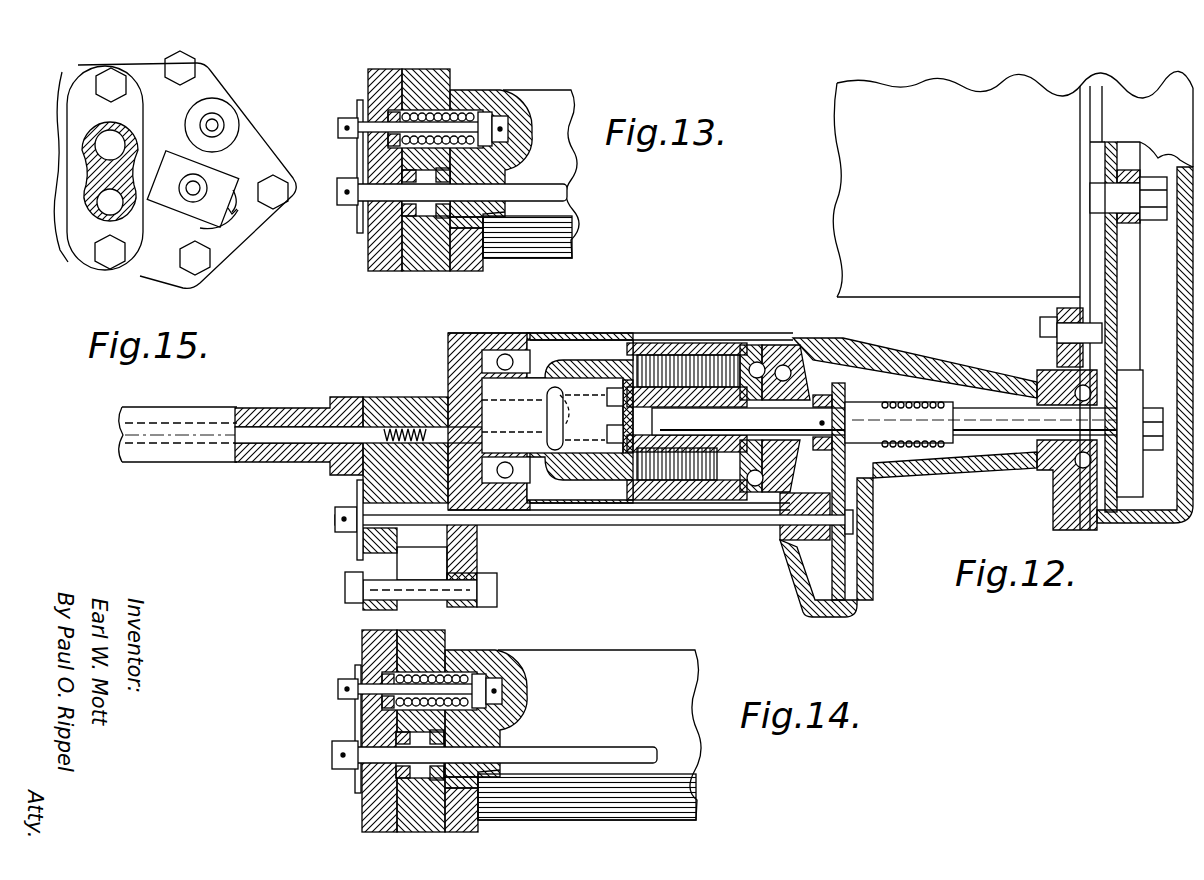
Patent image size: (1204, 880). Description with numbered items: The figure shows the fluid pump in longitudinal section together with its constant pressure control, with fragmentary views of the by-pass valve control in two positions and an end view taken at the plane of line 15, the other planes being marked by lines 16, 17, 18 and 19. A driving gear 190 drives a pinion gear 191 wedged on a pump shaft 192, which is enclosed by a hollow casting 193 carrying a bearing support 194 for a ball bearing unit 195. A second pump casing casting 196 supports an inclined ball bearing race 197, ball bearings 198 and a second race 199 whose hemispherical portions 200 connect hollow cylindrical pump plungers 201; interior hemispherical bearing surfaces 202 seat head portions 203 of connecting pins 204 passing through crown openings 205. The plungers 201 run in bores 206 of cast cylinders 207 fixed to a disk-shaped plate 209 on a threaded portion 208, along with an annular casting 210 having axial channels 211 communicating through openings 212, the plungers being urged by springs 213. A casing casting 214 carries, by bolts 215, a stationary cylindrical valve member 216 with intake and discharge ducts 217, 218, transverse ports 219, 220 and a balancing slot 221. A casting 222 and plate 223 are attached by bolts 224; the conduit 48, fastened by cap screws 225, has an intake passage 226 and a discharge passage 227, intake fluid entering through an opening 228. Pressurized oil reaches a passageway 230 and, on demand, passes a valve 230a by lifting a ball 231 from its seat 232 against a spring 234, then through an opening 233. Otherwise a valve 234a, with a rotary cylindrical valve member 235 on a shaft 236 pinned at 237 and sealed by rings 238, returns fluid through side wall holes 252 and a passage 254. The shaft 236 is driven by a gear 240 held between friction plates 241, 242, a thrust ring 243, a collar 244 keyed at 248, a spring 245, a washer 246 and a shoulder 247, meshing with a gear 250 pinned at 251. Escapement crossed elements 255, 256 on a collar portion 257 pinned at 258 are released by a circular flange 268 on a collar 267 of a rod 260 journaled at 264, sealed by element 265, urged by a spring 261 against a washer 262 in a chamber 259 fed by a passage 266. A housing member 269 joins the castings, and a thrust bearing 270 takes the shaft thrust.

In FIG. 12, the section line 15— 15 is at (324, 480).
In FIG. 12, the section line 16— 16 is at (617, 617).
In FIG. 12, the section line 17— 17 is at (537, 542).
In FIG. 12, the section line 18— 18 is at (428, 607).
In FIG. 12, the section line 19— 19 is at (172, 488).
In FIG. 15, the communicating conduit 48 is at (113, 206).
In FIG. 12, the communicating conduit 48 is at (122, 408).
In FIG. 12, the driving gear 190 is at (1108, 254).
In FIG. 12, the pinion gear 191 is at (1133, 473).
In FIG. 12, the pump shaft 192 is at (997, 440).
In FIG. 12, the hollow casting 193 is at (1015, 367).
In FIG. 12, the bearing support 194 is at (1032, 462).
In FIG. 12, the ball bearing unit 195 is at (1063, 478).
In FIG. 12, the second pump casing casting 196 is at (806, 617).
In FIG. 12, the ball bearing race 197 is at (703, 503).
In FIG. 12, the ball bearings 198 is at (795, 348).
In FIG. 12, the second race 199 is at (785, 340).
In FIG. 12, the hemispherical portions 200 is at (750, 333).
In FIG. 12, the hollow cylindrical pump plungers 201 is at (678, 333).
In FIG. 12, the interior hemispherical bearing surfaces 202 is at (772, 345).
In FIG. 12, the head portions 203 is at (896, 420).
In FIG. 12, the connecting pins 204 is at (705, 341).
In FIG. 12, the crown openings 205 is at (733, 333).
In FIG. 12, the cylinder bores 206 is at (752, 405).
In FIG. 12, the cast cylinders 207 is at (670, 333).
In FIG. 12, the threaded portion 208 is at (687, 421).
In FIG. 12, the disk-shaped plate 209 is at (623, 503).
In FIG. 12, the annular casting 210 is at (635, 515).
In FIG. 12, the axial channels 211 is at (573, 333).
In FIG. 12, the openings 212 is at (598, 333).
In FIG. 12, the springs 213 is at (657, 333).
In FIG. 12, the casing casting 214 is at (463, 333).
In FIG. 12, the bolts 215 is at (598, 345).
In FIG. 12, the stationary cylindrical valve member 216 is at (488, 340).
In FIG. 12, the axial intake duct 217 is at (495, 333).
In FIG. 12, the axial discharge duct 218 is at (628, 512).
In FIG. 12, the transverse intake port 219 is at (645, 520).
In FIG. 12, the transverse discharge port 220 is at (610, 503).
In FIG. 12, the additional slot 221 is at (565, 333).
In FIG. 12, the casting 222 is at (430, 395).
In FIG. 12, the plate 223 is at (375, 397).
In FIG. 15, the bolts 224 is at (205, 265).
In FIG. 12, the bolts 224 is at (345, 588).
In FIG. 15, the cap screws 225 is at (108, 260).
In FIG. 15, the intake passage 226 is at (108, 146).
In FIG. 12, the intake passage 226 is at (132, 462).
In FIG. 15, the high-pressure discharge passage 227 is at (120, 207).
In FIG. 12, the high-pressure discharge passage 227 is at (255, 399).
In FIG. 12, the opening 228 is at (415, 330).
In FIG. 12, the passageway 230 is at (560, 525).
In FIG. 12, the valve 230a is at (445, 385).
In FIG. 12, the ball 231 is at (552, 415).
In FIG. 12, the seat 232 is at (511, 445).
In FIG. 12, the opening 233 is at (380, 436).
In FIG. 12, the spring 234 is at (432, 404).
In FIG. 12, the valve 234a is at (385, 607).
In FIG. 14, the rotary cylindrical valve member 235 is at (435, 822).
In FIG. 14, the shaft 236 is at (615, 740).
In FIG. 12, the shaft 236 is at (745, 540).
In FIG. 12, the pin 237 is at (362, 557).
In FIG. 12, the composition sealing rings 238 is at (353, 537).
In FIG. 12, the gear 240 is at (835, 468).
In FIG. 12, the friction plate 241 is at (848, 403).
In FIG. 12, the friction plate 242 is at (845, 387).
In FIG. 12, the thrust ring 243 is at (833, 446).
In FIG. 12, the axially slidable collar 244 is at (912, 395).
In FIG. 12, the spring 245 is at (935, 396).
In FIG. 12, the washer 246 is at (958, 396).
In FIG. 12, the shoulder 247 is at (960, 412).
In FIG. 12, the key 248 is at (877, 410).
In FIG. 12, the gear 250 is at (866, 602).
In FIG. 12, the pin 251 is at (866, 588).
In FIG. 14, the side wall holes 252 is at (362, 790).
In FIG. 12, the passage 254 is at (360, 500).
In FIG. 15, the crossed element 255 is at (220, 228).
In FIG. 13, the crossed element 255 is at (372, 258).
In FIG. 14, the crossed element 255 is at (348, 730).
In FIG. 15, the crossed element 256 is at (192, 190).
In FIG. 13, the crossed element 256 is at (400, 132).
In FIG. 14, the crossed element 256 is at (357, 720).
In FIG. 15, the collar portion 257 is at (230, 220).
In FIG. 13, the collar portion 257 is at (366, 214).
In FIG. 14, the collar portion 257 is at (337, 766).
In FIG. 14, the pin 258 is at (337, 752).
In FIG. 13, the chamber 259 is at (452, 98).
In FIG. 14, the chamber 259 is at (452, 655).
In FIG. 13, the shaft 260 is at (508, 136).
In FIG. 14, the shaft 260 is at (503, 690).
In FIG. 13, the spring 261 is at (480, 115).
In FIG. 14, the spring 261 is at (512, 700).
In FIG. 13, the washer 262 is at (495, 133).
In FIG. 13, the journal 264 is at (368, 88).
In FIG. 13, the rubber sealing element 265 is at (368, 72).
In FIG. 13, the passage 266 is at (402, 155).
In FIG. 14, the passage 266 is at (355, 702).
In FIG. 12, the passage 266 is at (353, 495).
In FIG. 13, the collar 267 is at (340, 126).
In FIG. 14, the collar 267 is at (340, 683).
In FIG. 15, the circular flange 268 is at (215, 105).
In FIG. 13, the circular flange 268 is at (357, 108).
In FIG. 14, the circular flange 268 is at (355, 672).
In FIG. 12, the cylindrical pressed steel housing member 269 is at (800, 575).
In FIG. 12, the ball and race thrust bearing means 270 is at (500, 508).